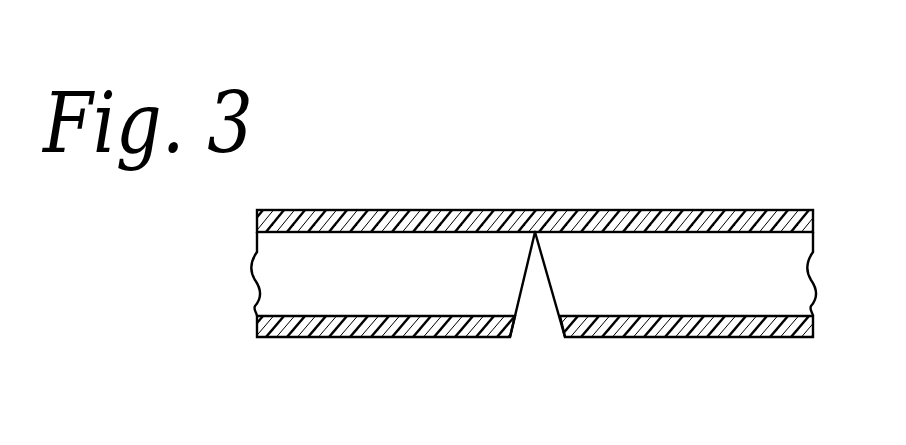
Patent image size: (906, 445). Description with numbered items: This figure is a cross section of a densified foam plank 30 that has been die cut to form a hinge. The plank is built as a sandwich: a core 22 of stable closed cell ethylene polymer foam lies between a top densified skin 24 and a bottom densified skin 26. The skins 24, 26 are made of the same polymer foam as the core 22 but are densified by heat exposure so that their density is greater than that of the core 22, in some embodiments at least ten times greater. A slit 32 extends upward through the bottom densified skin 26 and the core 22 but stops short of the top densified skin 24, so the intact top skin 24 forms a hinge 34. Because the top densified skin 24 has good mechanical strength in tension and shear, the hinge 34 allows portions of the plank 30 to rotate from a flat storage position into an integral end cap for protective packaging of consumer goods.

The densified foam plank 30 is at (533, 267).
The top densified skin 24 is at (399, 218).
The bottom densified skin 26 is at (394, 326).
The core 22 is at (470, 290).
The slit 32 is at (537, 325).
The hinge 34 is at (533, 222).